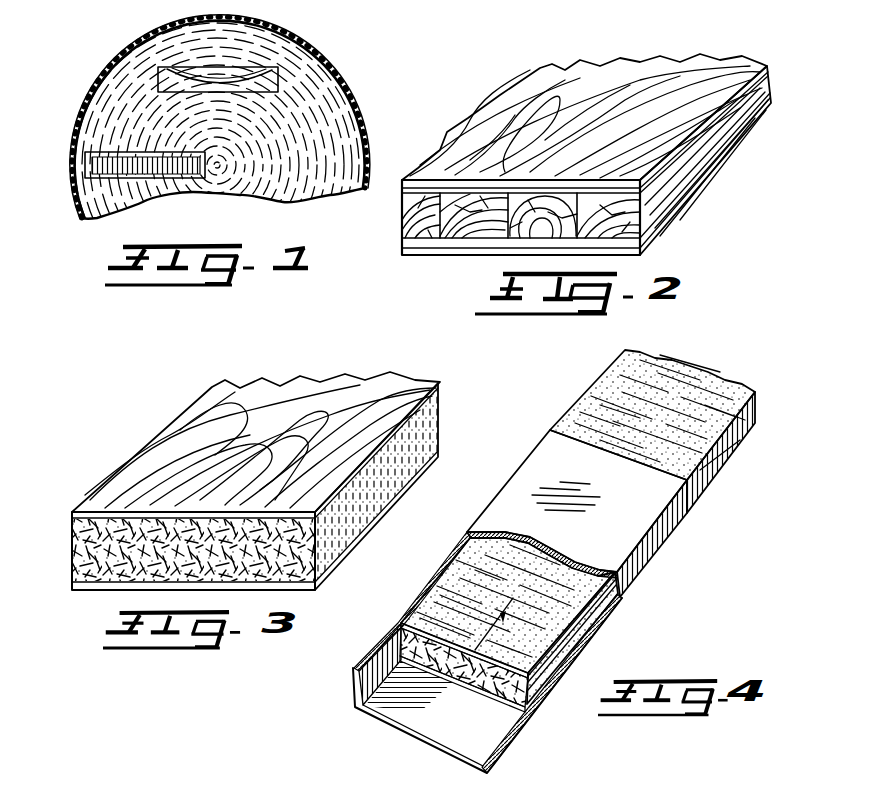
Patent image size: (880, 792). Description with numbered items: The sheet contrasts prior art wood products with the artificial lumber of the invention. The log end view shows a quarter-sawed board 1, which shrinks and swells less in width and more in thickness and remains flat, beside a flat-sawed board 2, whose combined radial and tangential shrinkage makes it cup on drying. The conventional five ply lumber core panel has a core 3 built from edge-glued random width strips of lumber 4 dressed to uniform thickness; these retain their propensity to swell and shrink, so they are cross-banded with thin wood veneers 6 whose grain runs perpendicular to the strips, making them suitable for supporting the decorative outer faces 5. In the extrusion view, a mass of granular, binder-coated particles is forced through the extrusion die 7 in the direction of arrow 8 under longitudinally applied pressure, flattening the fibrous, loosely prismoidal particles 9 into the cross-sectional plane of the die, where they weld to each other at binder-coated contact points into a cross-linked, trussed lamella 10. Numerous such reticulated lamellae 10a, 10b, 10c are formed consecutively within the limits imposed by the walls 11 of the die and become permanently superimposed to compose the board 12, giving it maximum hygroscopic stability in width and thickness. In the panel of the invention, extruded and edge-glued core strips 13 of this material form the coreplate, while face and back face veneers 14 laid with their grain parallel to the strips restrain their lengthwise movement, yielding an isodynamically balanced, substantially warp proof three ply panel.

In FIG. 1, the quarter-sawed board 1 is at (85, 165).
In FIG. 1, the flat-sawed board 2 is at (265, 73).
In FIG. 2, the core 3 is at (768, 108).
In FIG. 2, the strips of lumber 4 is at (472, 233).
In FIG. 2, the outer faces 5 is at (453, 151).
In FIG. 2, the thin wood veneers (crossbands) 6 is at (403, 187).
In FIG. 4, the extrusion die 7 is at (512, 521).
In FIG. 4, the arrow 8 is at (443, 670).
In FIG. 4, the particles 9 is at (427, 668).
In FIG. 4, the lamella 10 is at (541, 690).
In FIG. 4, the reticulated lamella 10a is at (555, 676).
In FIG. 4, the reticulated lamella 10b is at (572, 655).
In FIG. 4, the reticulated lamella 10c is at (590, 642).
In FIG. 4, the walls of the extrusion die 11 is at (358, 682).
In FIG. 4, the board 12 is at (703, 487).
In FIG. 3, the core strips 13 is at (220, 587).
In FIG. 3, the face veneers 14 is at (163, 450).